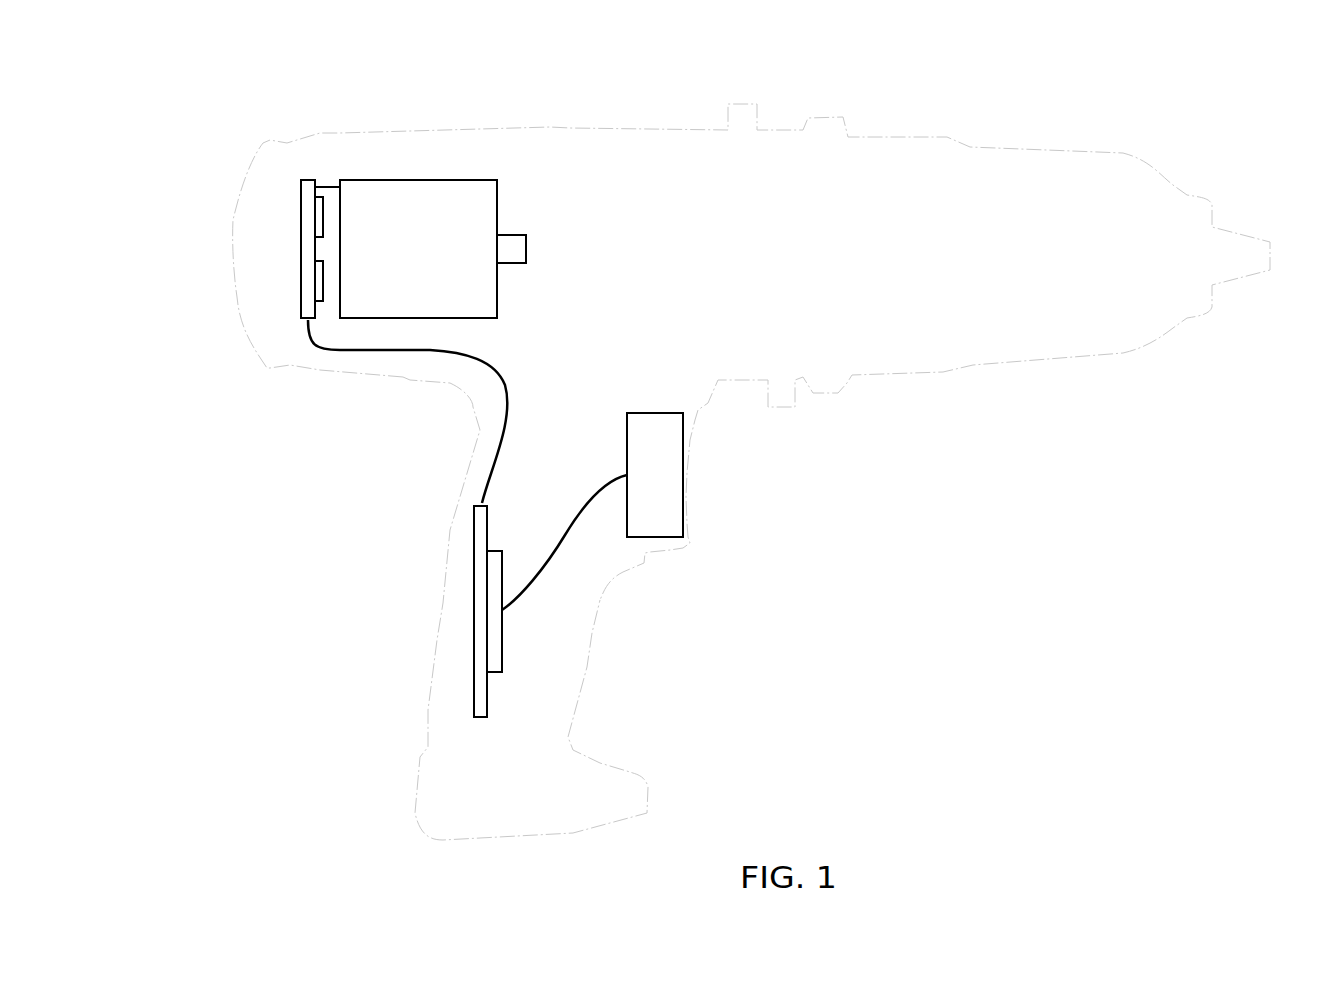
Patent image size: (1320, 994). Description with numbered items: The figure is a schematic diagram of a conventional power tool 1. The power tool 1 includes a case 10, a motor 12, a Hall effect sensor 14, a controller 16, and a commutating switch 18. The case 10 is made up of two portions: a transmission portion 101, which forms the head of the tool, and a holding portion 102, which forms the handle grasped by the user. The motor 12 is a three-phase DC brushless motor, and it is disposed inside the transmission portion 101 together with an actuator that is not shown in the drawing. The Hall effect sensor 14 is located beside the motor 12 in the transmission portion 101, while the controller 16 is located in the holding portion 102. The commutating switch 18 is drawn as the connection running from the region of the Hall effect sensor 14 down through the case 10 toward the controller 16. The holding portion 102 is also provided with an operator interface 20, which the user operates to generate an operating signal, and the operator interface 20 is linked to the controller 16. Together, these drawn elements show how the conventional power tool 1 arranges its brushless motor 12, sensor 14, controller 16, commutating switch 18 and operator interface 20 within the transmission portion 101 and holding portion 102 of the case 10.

The power tool 1 is at (701, 447).
The case 10 is at (689, 472).
The transmission portion 101 is at (267, 245).
The holding portion 102 is at (443, 598).
The motor 12 is at (405, 218).
The Hall effect sensor 14 is at (320, 232).
The controller 16 is at (497, 652).
The commutating switch 18 is at (318, 287).
The operator interface 20 is at (663, 484).